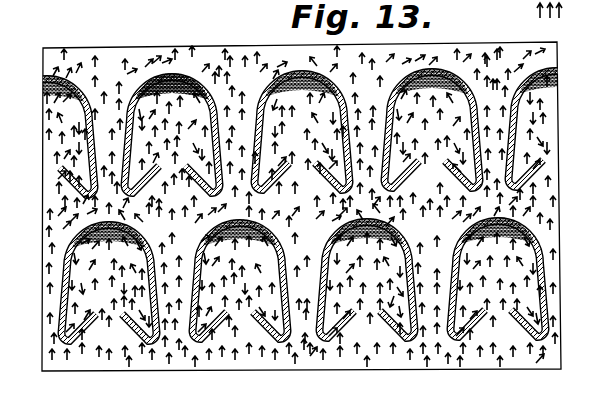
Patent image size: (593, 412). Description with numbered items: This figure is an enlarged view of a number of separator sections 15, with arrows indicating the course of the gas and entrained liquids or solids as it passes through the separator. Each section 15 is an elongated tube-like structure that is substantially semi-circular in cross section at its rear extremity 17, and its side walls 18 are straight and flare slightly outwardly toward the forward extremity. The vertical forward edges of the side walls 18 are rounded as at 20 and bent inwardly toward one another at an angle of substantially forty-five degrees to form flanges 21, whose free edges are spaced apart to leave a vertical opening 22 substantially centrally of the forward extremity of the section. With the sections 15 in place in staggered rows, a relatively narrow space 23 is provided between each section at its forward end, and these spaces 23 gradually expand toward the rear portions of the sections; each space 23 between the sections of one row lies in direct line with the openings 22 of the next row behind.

The separator section 15 is at (87, 316).
The rear extremity 17 is at (172, 61).
The side walls 18 is at (176, 107).
The rounded forward edges 20 is at (116, 370).
The flanges 21 is at (83, 362).
The vertical opening 22 is at (128, 358).
The space between sections 23 is at (302, 360).